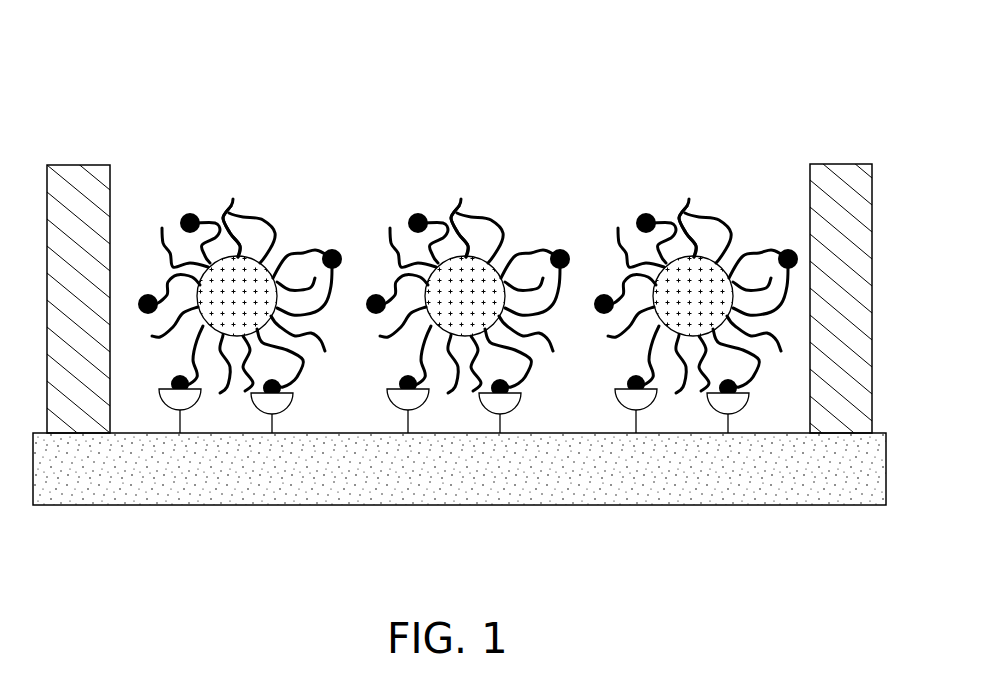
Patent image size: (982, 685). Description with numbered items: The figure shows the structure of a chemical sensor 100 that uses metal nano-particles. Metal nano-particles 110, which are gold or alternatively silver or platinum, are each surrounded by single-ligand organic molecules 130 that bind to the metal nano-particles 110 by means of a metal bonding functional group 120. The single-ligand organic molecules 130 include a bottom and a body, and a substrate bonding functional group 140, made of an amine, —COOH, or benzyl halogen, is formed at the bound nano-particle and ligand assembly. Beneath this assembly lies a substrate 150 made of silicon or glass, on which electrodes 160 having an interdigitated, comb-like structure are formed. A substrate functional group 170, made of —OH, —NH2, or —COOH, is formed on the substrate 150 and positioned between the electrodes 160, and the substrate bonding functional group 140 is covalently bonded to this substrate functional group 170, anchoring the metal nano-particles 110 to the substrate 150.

The chemical sensor 100 is at (494, 33).
The metal nano-particles 110 is at (258, 268).
The metal bonding functional group 120 is at (270, 320).
The single-ligand organic molecules 130 is at (238, 255).
The substrate bonding functional group 140 is at (190, 213).
The substrate 150 is at (452, 505).
The electrodes 160 is at (78, 185).
The substrate functional group 170 is at (270, 403).